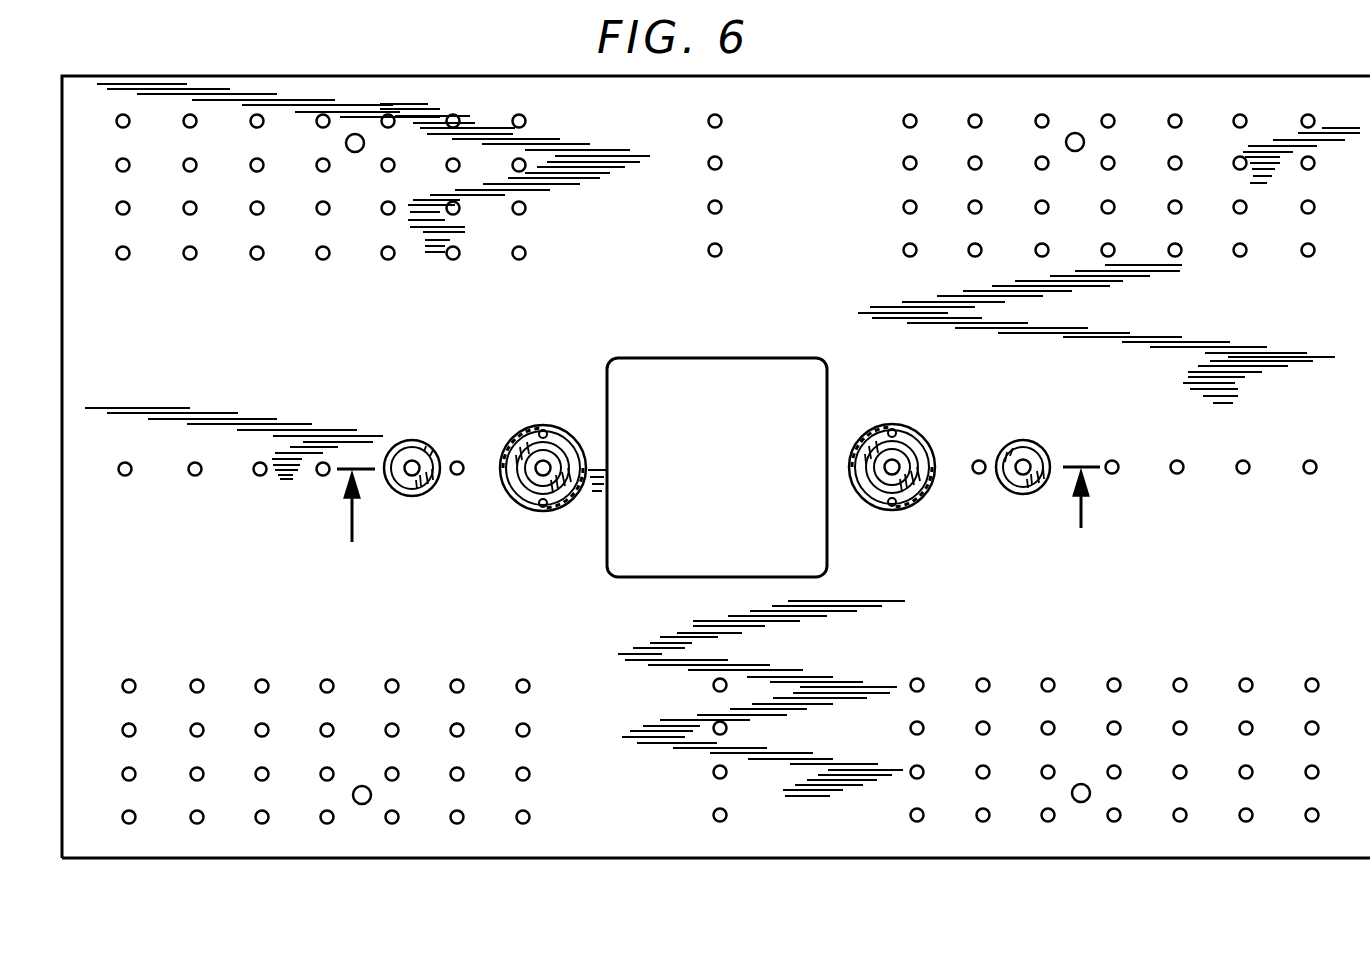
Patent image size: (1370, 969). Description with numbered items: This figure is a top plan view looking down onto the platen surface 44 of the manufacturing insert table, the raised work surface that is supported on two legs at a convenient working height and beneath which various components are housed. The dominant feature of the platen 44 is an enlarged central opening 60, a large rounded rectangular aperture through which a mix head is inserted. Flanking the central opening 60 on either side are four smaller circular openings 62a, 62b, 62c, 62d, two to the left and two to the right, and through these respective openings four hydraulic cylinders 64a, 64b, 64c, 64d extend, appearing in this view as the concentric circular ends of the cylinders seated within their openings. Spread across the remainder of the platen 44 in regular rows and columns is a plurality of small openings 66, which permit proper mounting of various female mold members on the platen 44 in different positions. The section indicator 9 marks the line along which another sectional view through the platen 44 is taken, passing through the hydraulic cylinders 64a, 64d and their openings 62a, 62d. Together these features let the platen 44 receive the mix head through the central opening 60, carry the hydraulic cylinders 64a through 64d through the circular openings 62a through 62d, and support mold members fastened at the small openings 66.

The platen surface 44 is at (848, 98).
The enlarged central opening 60 is at (770, 366).
The smaller circular opening 62a is at (410, 441).
The smaller circular opening 62b is at (535, 428).
The smaller circular opening 62c is at (878, 432).
The smaller circular opening 62d is at (1020, 444).
The hydraulic cylinder 64a is at (416, 478).
The hydraulic cylinder 64b is at (545, 478).
The hydraulic cylinder 64c is at (890, 477).
The hydraulic cylinder 64d is at (1023, 478).
The small openings 66 is at (190, 259).
The section line 9- 9 is at (709, 517).